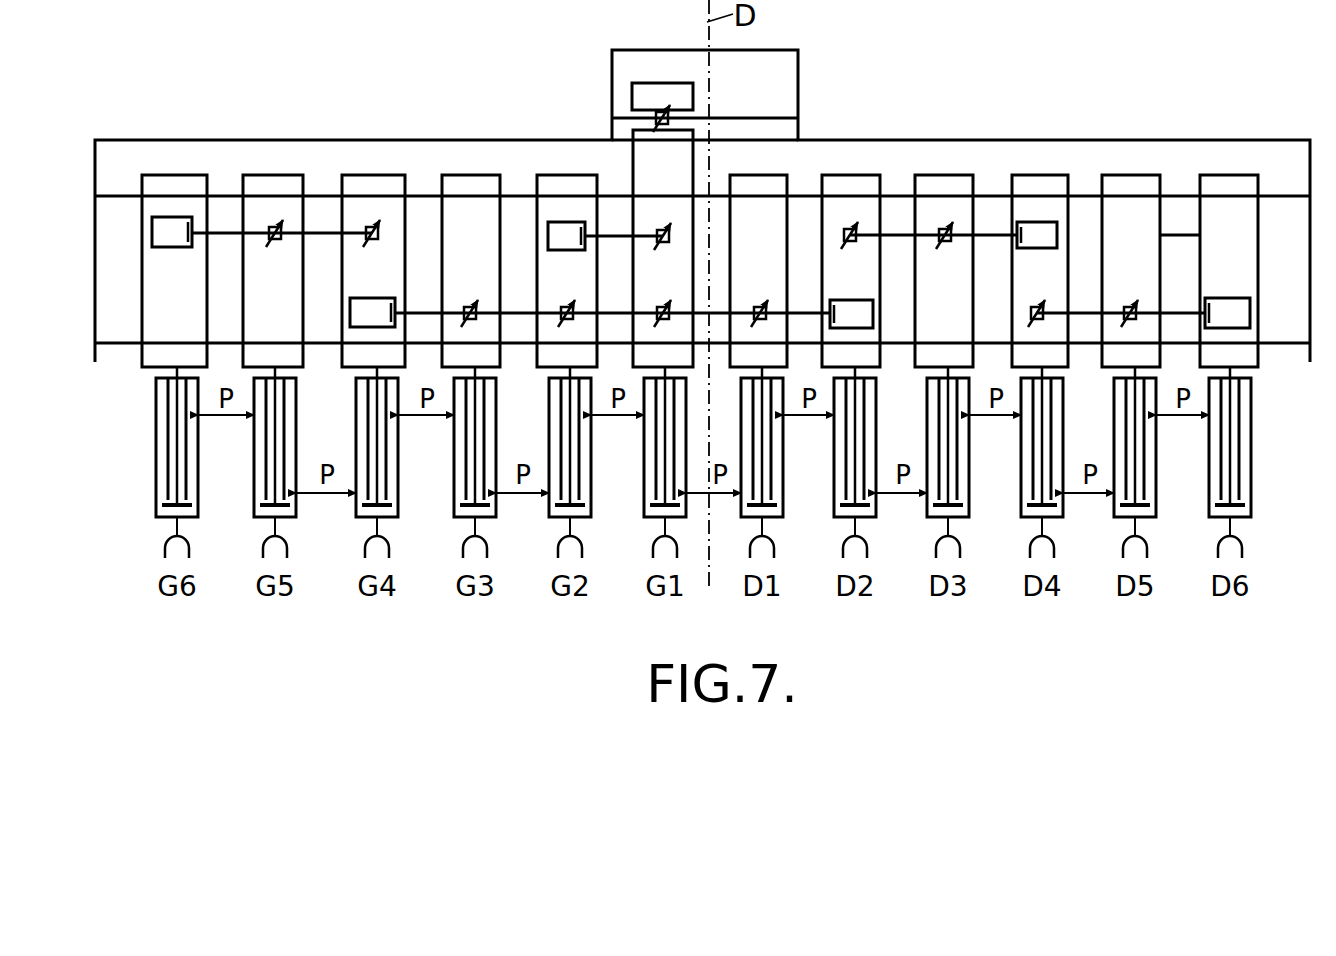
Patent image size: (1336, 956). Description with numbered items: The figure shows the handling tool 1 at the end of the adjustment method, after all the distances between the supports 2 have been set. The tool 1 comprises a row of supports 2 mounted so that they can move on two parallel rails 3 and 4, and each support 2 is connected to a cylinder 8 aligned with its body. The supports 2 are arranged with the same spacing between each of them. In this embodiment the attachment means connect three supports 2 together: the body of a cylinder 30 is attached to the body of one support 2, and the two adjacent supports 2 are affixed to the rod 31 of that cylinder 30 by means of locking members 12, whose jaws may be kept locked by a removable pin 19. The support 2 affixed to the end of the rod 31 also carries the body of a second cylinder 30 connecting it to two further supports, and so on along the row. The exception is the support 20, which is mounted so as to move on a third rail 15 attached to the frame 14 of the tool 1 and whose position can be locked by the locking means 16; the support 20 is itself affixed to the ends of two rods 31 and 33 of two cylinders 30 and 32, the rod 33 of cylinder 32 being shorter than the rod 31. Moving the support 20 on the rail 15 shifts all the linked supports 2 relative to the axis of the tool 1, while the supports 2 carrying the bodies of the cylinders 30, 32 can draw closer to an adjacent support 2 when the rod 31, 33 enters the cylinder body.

The handling tool 1 is at (880, 108).
The supports 2 is at (630, 173).
The rail 3 is at (1283, 196).
The rail 4 is at (1278, 345).
The cylinders 8 is at (155, 428).
The locking member 12 is at (362, 173).
The frame 14 is at (800, 97).
The third rail 15 is at (718, 118).
The locking means 16 is at (655, 112).
The pin 19 is at (278, 228).
The support 20 is at (677, 160).
The cylinder 30 is at (180, 217).
The rod 31 is at (226, 230).
The cylinder 32 is at (562, 224).
The rod 33 is at (610, 236).